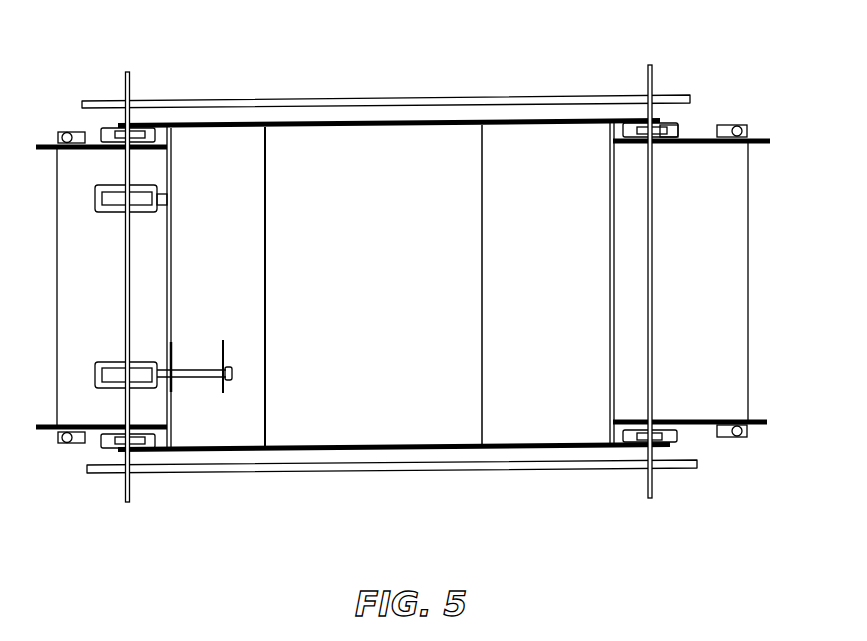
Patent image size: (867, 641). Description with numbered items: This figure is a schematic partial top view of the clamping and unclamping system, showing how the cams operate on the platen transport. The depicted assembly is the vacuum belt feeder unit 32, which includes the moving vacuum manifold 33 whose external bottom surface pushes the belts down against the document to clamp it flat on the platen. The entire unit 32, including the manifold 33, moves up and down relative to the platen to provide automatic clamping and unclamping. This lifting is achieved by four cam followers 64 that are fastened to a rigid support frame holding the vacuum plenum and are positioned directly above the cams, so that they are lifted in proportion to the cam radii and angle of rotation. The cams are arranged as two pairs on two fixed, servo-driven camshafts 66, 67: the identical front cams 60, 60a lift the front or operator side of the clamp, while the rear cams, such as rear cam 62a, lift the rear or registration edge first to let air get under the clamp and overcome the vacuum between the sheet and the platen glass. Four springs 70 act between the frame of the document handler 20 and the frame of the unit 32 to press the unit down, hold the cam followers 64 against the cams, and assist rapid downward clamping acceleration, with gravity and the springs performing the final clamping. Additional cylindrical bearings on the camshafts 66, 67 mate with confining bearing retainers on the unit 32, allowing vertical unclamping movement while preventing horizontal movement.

The document handler (DH) 20 is at (365, 60).
The vacuum belt feeder unit 32 is at (347, 500).
The moving vacuum manifold 33 is at (397, 143).
The front cam 60 is at (103, 440).
The front cam 60a is at (665, 440).
The rear cam 62a is at (678, 128).
The cam follower 64 is at (143, 132).
The camshaft 66 is at (130, 75).
The camshaft 67 is at (652, 68).
The spring 70 is at (67, 130).